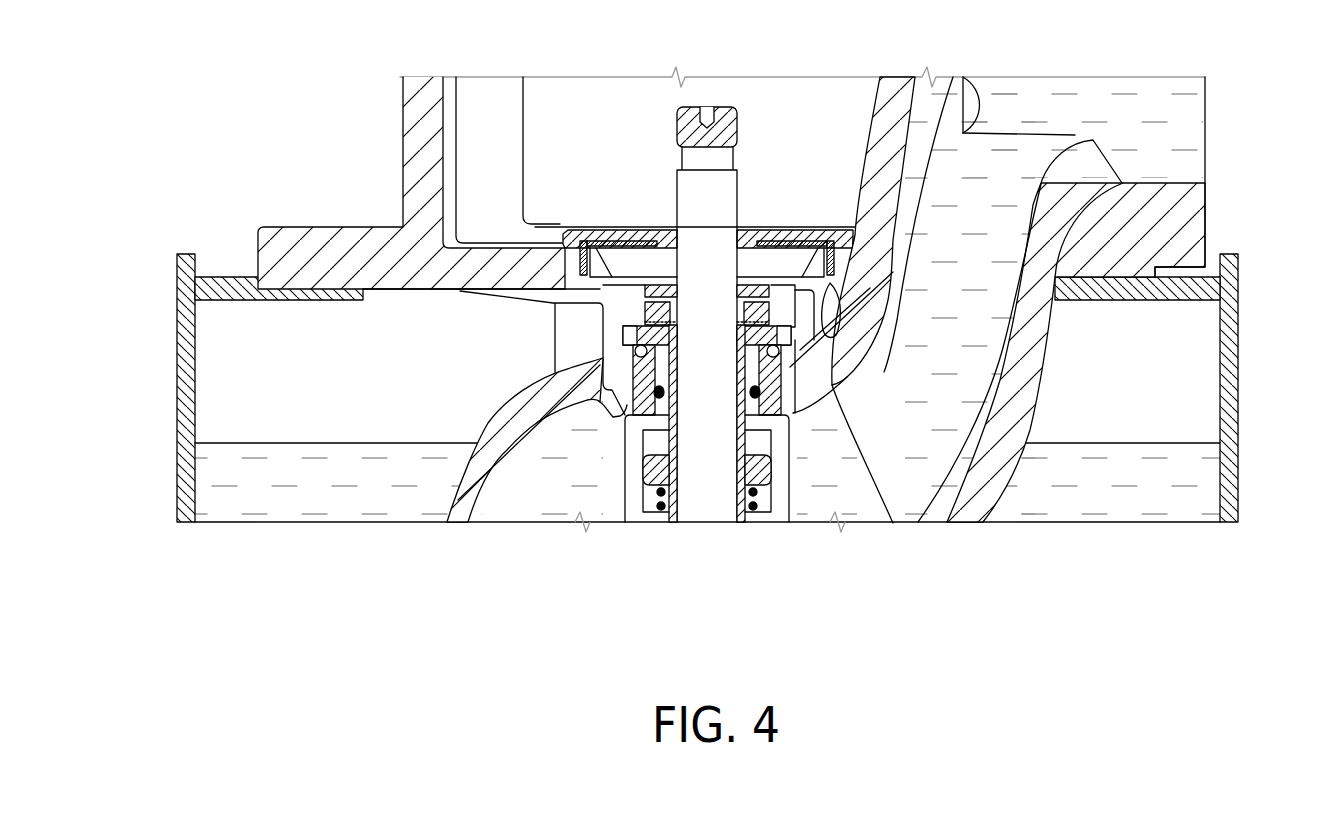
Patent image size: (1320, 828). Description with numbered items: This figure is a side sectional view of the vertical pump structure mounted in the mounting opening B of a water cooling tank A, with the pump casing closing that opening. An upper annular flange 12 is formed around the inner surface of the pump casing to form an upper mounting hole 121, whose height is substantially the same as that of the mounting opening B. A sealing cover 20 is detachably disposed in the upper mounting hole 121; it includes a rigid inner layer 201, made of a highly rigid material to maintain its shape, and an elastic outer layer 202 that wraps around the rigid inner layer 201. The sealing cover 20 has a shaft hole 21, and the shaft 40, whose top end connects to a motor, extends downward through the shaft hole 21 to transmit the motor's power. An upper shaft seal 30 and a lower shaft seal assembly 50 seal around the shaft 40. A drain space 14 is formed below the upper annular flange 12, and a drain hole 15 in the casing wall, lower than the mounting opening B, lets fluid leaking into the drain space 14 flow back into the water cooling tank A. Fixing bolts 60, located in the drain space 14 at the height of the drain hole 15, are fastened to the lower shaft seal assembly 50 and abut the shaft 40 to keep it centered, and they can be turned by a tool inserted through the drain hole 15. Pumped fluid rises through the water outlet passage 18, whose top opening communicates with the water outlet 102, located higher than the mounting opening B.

The water cooling tank A is at (183, 365).
The mounting opening B is at (400, 302).
The upper annular flange 12 is at (305, 238).
The upper mounting hole 121 is at (783, 413).
The drain space 14 is at (812, 319).
The drain hole 15 is at (513, 339).
The water outlet passage 18 is at (1043, 343).
The sealing cover 20 is at (555, 224).
The rigid inner layer 201 is at (612, 232).
The elastic outer layer 202 is at (582, 236).
The shaft hole 21 is at (752, 172).
The upper shaft seal 30 is at (753, 228).
The shaft 40 is at (693, 513).
The lower shaft seal assembly 50 is at (793, 400).
The fixing bolts 60 is at (550, 304).
The water outlet 102 is at (1178, 135).